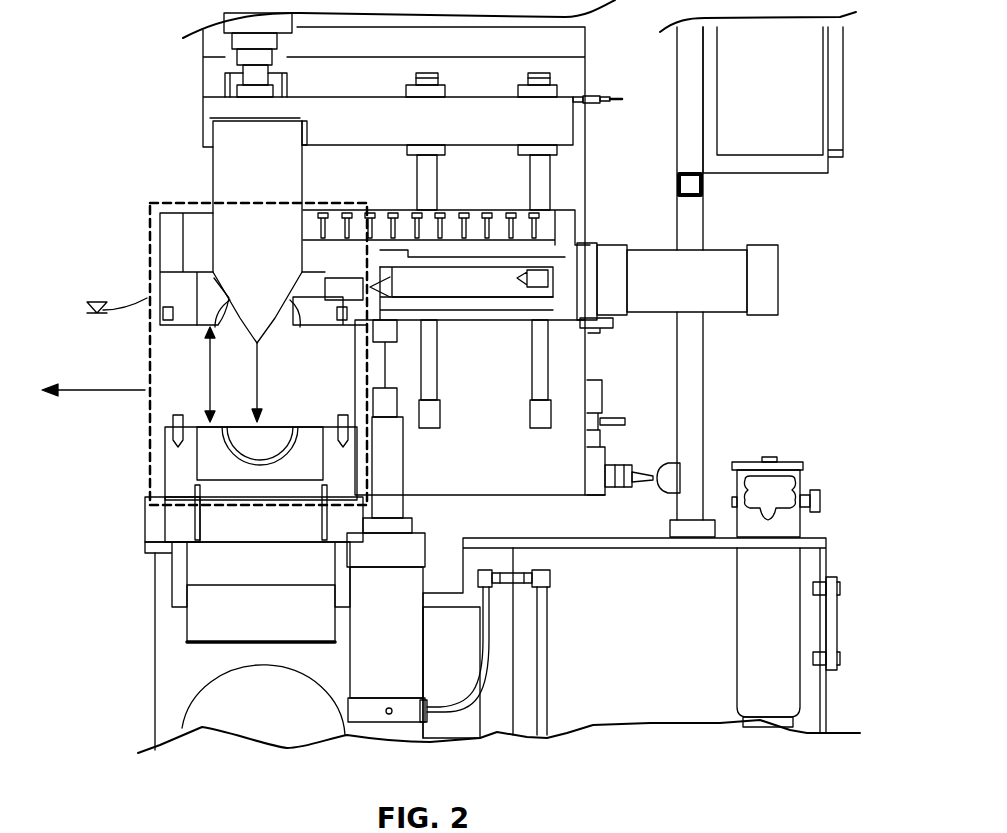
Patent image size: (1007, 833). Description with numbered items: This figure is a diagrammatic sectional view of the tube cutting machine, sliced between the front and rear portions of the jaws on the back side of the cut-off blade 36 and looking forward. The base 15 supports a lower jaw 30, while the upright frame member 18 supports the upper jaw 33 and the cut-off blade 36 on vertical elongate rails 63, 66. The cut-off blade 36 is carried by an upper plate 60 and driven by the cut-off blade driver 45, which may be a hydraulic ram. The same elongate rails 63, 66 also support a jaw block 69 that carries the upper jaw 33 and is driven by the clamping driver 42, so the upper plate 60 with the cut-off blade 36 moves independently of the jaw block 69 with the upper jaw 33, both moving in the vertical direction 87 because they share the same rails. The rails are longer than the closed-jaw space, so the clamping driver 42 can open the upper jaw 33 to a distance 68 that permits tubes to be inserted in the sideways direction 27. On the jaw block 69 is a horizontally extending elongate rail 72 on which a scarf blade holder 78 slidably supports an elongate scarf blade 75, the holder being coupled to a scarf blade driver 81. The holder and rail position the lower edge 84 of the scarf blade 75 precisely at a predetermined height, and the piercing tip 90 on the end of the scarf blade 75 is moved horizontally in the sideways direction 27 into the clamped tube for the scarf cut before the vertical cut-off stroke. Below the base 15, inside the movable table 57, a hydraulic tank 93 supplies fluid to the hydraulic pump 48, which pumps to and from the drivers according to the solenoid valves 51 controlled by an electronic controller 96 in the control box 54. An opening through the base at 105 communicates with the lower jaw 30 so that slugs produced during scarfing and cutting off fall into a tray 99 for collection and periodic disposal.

The base 15 is at (147, 523).
The frame member 18 is at (572, 77).
The sideways direction 27 is at (95, 392).
The lower jaw 30 is at (178, 490).
The upper jaw 33 is at (198, 293).
The cut-off blade 36 is at (220, 170).
The clamping driver 42 is at (382, 647).
The cut-off blade driver 45 is at (240, 60).
The hydraulic pump 48 is at (793, 527).
The solenoid valves 51 is at (598, 397).
The control box 54 is at (767, 173).
The movable table 57 is at (155, 665).
The upper plate 60 is at (220, 112).
The elongate rail 63 is at (430, 407).
The elongate rail 66 is at (535, 408).
The distance 68 is at (208, 393).
The jaw block 69 is at (167, 262).
The horizontally extending elongate rail 72 is at (553, 235).
The scarf blade 75 is at (347, 280).
The scarf blade holder 78 is at (470, 288).
The scarf blade driver 81 is at (722, 300).
The lower edge 84 is at (327, 300).
The vertical direction 87 is at (260, 400).
The piercing tip 90 is at (287, 323).
The hydraulic tank 93 is at (197, 707).
The electronic controller 96 is at (788, 142).
The tray 99 is at (263, 610).
The opening through the base 105 is at (227, 530).